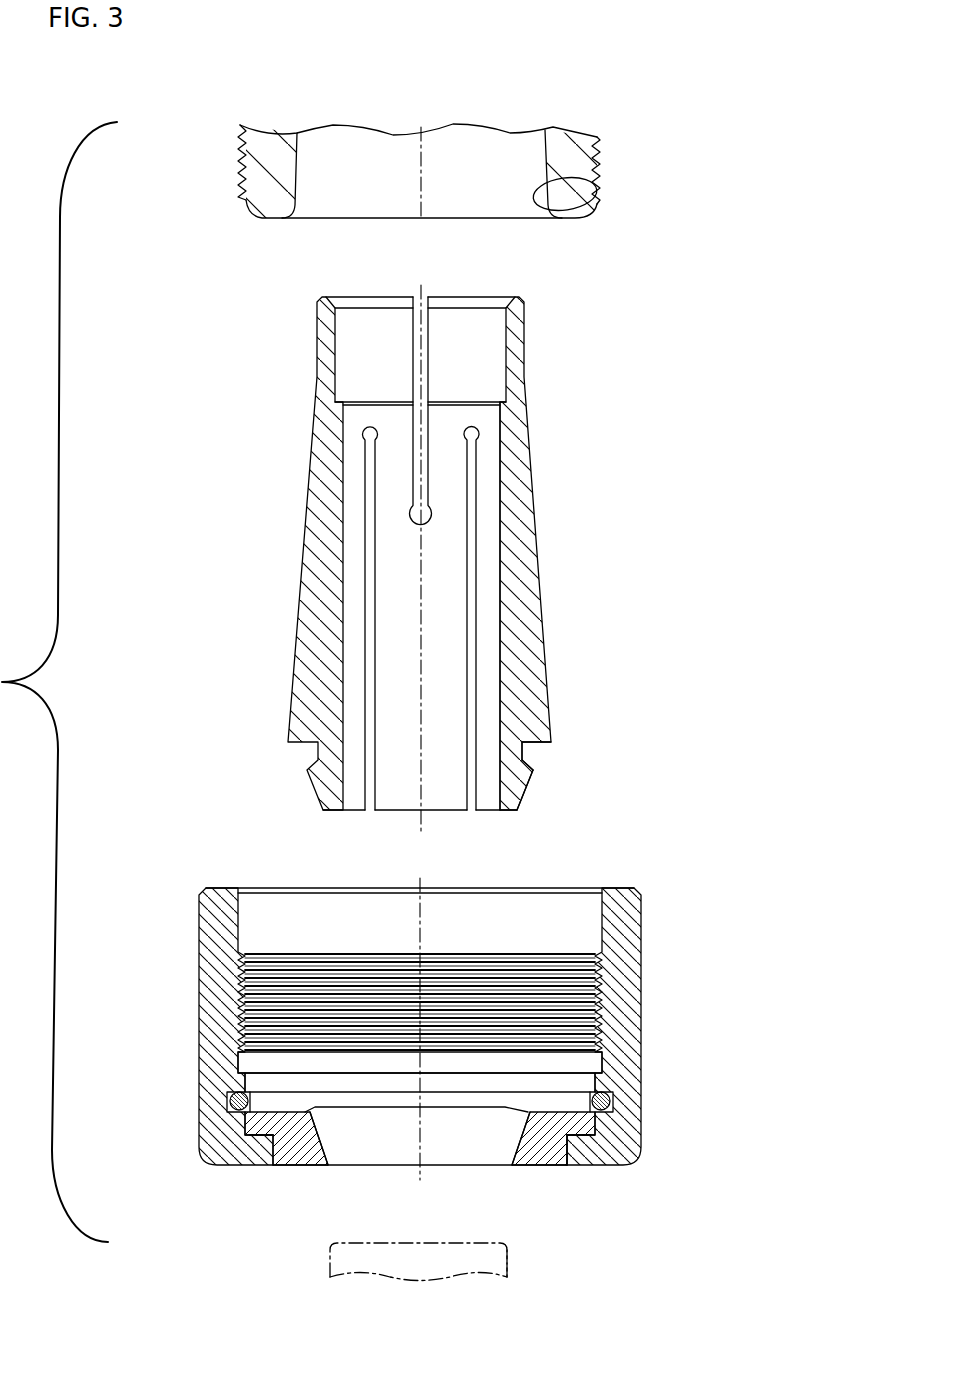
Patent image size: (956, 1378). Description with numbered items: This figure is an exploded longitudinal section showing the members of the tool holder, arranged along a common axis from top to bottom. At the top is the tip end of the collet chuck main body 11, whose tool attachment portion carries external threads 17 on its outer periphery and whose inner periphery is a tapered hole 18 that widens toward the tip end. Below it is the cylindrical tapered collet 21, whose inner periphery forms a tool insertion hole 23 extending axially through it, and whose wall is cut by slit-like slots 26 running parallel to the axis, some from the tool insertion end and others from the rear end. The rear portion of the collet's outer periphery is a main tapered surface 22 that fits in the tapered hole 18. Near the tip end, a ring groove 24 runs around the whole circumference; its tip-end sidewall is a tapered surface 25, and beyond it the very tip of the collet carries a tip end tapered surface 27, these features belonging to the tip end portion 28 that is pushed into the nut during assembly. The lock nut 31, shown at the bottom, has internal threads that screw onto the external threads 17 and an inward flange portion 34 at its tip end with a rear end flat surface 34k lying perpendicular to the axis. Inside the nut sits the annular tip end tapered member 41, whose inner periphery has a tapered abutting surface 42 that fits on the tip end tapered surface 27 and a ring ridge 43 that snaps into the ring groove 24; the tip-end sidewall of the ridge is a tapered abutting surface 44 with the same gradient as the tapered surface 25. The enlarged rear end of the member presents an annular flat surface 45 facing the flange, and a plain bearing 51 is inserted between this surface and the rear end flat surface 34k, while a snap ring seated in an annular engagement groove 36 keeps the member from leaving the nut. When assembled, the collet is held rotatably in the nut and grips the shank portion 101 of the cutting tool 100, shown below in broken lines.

The collet chuck main body 11 is at (460, 175).
The external threads 17 is at (604, 150).
The tapered hole 18 is at (568, 203).
The tapered collet 21 is at (452, 564).
The main tapered surface 22 is at (535, 498).
The tool insertion hole 23 is at (492, 459).
The slots 26 is at (472, 593).
The ring groove 24 is at (523, 750).
The tapered surface 25 is at (533, 762).
The tip end tapered surface 27 is at (530, 793).
The tip end portion 28 is at (510, 814).
The lock nut 31 is at (459, 1047).
The tip end tapered member 41 is at (558, 1090).
The annular engagement groove 36 is at (604, 1088).
The plain bearing 51 is at (607, 1110).
The annular flat surface 45 is at (590, 1142).
The inward flange portion 34 is at (421, 1162).
The rear end flat surface 34k is at (568, 1138).
The tapered abutting surface 42 is at (522, 1152).
The ring ridge 43 is at (505, 1108).
The tapered abutting surface 44 is at (308, 1114).
The cutting tool 100 is at (313, 1266).
The shank portion 101 is at (508, 1262).